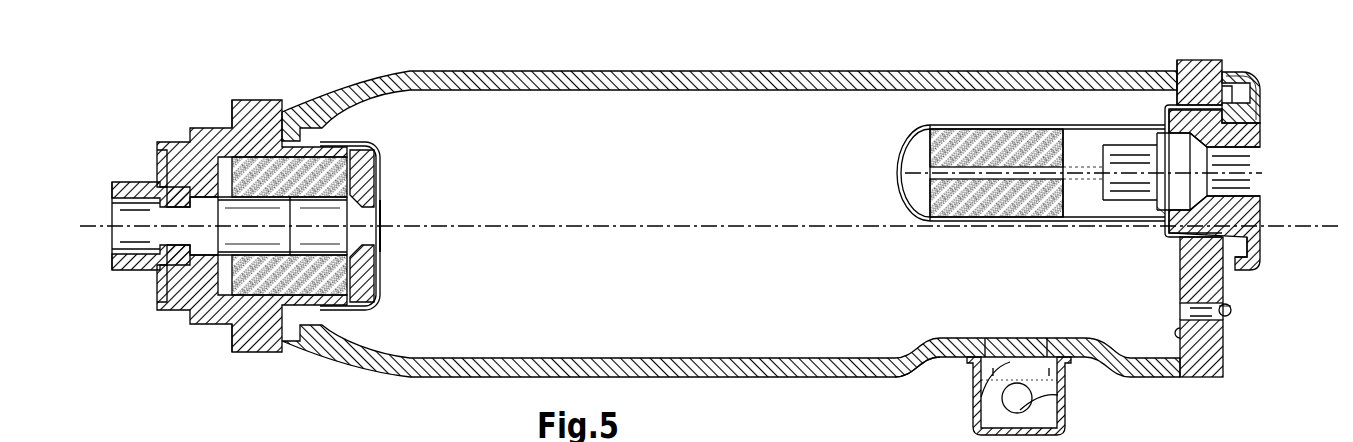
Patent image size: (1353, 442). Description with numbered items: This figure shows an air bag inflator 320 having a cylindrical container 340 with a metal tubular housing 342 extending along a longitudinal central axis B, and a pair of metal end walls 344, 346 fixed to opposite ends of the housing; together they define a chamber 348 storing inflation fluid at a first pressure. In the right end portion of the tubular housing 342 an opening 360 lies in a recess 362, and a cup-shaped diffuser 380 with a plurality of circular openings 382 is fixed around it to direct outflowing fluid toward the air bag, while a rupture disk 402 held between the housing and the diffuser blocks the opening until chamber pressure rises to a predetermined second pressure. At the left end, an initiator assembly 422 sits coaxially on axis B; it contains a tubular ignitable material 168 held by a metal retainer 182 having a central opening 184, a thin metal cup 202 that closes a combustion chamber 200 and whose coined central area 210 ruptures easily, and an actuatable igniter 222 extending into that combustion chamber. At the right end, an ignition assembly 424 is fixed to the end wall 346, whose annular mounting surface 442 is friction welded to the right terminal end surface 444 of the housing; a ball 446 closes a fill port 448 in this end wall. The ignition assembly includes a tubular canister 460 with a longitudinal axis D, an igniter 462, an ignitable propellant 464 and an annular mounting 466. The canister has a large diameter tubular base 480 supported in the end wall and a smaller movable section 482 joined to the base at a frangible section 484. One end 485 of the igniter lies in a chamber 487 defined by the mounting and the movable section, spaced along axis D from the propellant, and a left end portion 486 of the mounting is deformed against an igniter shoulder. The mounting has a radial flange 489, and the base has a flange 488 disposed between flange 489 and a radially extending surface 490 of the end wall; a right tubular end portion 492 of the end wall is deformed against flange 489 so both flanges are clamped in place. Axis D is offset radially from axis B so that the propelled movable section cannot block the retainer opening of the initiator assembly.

The ignitable material 168 is at (285, 172).
The retainer 182 is at (381, 193).
The central opening 184 is at (381, 220).
The combustion chamber 200 is at (327, 241).
The cup 202 is at (386, 290).
The central area 210 is at (377, 233).
The igniter 222 is at (200, 243).
The air bag inflator 320 is at (899, 60).
The container 340 is at (1181, 52).
The tubular housing 342 is at (671, 80).
The end wall 344 is at (263, 100).
The end wall 346 is at (1236, 55).
The chamber 348 is at (637, 321).
The opening 360 is at (992, 345).
The recess 362 is at (940, 366).
The diffuser 380 is at (1069, 370).
The circular openings 382 is at (1072, 402).
The rupture disk 402 is at (988, 380).
The initiator assembly 422 is at (390, 134).
The ignition assembly 424 is at (888, 135).
The annular mounting surface 442 is at (1190, 332).
The right terminal end surface 444 is at (1220, 363).
The ball 446 is at (1233, 307).
The fill port 448 is at (1228, 318).
The canister 460 is at (1072, 230).
The igniter 462 is at (1178, 162).
The propellant 464 is at (990, 190).
The annular mounting 466 is at (1240, 212).
The tubular base 480 is at (1177, 65).
The movable section 482 is at (961, 130).
The frangible section 484 is at (1187, 237).
The end of igniter 485 is at (1096, 153).
The left end portion 486 is at (1157, 208).
The chamber 487 is at (1087, 195).
The flange 488 is at (1229, 95).
The flange 489 is at (1233, 104).
The radially extending surface 490 is at (1234, 238).
The right tubular end portion 492 is at (1244, 92).
The axis B is at (578, 226).
The axis D is at (892, 171).